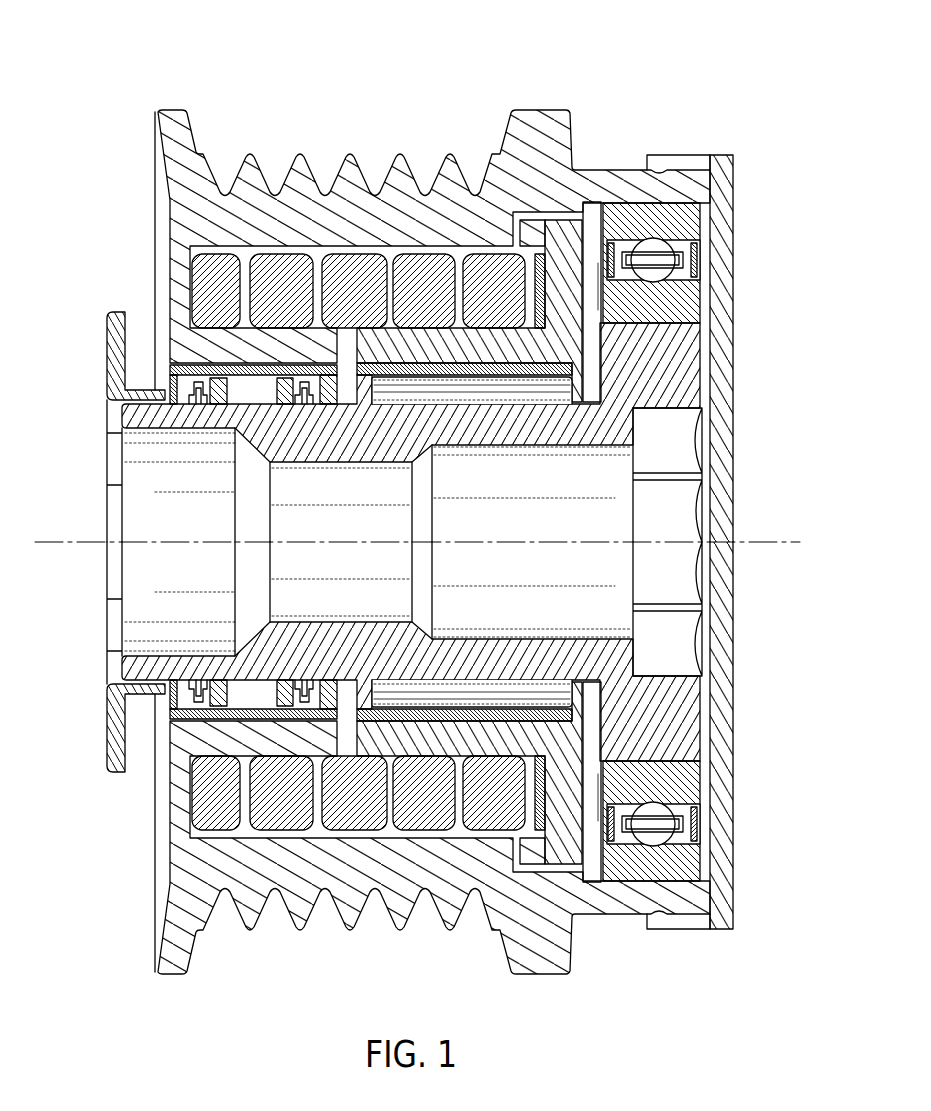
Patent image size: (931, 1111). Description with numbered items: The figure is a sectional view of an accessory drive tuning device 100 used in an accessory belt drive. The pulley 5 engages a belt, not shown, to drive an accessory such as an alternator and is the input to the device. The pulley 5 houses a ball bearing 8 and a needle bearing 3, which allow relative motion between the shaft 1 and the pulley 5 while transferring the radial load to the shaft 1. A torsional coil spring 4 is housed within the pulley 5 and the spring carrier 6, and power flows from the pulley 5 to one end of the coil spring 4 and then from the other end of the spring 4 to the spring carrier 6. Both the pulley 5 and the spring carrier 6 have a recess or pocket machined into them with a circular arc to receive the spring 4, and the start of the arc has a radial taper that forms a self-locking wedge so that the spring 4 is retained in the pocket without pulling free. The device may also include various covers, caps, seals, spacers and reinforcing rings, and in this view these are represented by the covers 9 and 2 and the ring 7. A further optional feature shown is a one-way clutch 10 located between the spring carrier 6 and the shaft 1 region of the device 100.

The accessory drive tuning device 100 is at (490, 68).
The shaft 1 is at (135, 415).
The cover 2 is at (113, 368).
The needle bearing 3 is at (188, 392).
The torsional spring 4 is at (207, 272).
The pulley 5 is at (172, 140).
The spring carrier 6 is at (544, 230).
The ring 7 is at (592, 218).
The ball bearing 8 is at (683, 232).
The cover 9 is at (722, 230).
The one-way clutch 10 is at (557, 387).